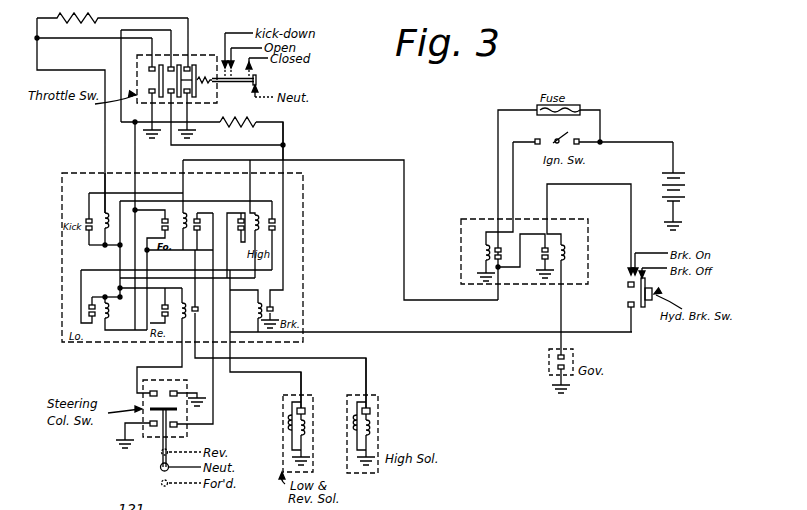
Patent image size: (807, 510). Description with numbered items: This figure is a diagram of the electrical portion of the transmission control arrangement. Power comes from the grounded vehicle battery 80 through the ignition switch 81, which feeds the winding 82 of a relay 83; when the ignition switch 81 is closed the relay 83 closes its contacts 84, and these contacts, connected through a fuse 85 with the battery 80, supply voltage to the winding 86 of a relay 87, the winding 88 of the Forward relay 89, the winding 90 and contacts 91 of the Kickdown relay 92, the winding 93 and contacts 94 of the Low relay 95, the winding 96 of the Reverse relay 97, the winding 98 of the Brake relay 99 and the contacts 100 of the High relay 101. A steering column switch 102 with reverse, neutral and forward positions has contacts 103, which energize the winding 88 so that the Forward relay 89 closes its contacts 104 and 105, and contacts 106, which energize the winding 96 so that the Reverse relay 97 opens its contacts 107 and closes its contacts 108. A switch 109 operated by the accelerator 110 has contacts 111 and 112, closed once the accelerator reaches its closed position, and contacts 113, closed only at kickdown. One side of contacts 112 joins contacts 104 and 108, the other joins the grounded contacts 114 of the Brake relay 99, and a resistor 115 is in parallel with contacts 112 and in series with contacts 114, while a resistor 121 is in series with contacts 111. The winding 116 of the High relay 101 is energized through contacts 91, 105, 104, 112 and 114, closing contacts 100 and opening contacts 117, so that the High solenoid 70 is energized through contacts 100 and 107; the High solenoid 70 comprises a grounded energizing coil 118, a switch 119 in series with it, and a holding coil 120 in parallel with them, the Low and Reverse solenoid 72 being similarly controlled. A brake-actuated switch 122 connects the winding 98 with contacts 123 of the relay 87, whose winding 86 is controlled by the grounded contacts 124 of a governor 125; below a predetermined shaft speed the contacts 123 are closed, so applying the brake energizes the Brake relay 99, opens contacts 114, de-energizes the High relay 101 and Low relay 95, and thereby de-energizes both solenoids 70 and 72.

The High solenoid 70 is at (386, 417).
The Low and Reverse solenoid 72 is at (280, 448).
The battery 80 is at (686, 186).
The ignition switch 81 is at (552, 137).
The winding 82 is at (485, 245).
The relay 83 is at (475, 254).
The contacts 84 is at (501, 248).
The fuse 85 is at (581, 108).
The winding 86 is at (563, 244).
The relay 87 is at (571, 257).
The winding 88 is at (185, 212).
The Forward relay 89 is at (159, 229).
The winding 90 is at (106, 212).
The contacts 91 is at (88, 214).
The Kickdown relay 92 is at (86, 238).
The winding 93 is at (109, 311).
The contacts 94 is at (93, 305).
The Low relay 95 is at (97, 328).
The winding 96 is at (183, 302).
The Reverse relay 97 is at (173, 328).
The winding 98 is at (257, 308).
The Brake relay 99 is at (254, 316).
The contacts 100 is at (277, 227).
The High relay 101 is at (262, 236).
The steering column switch 102 is at (189, 385).
The contacts 103 is at (178, 426).
The contacts 104 is at (165, 218).
The contacts 105 is at (204, 217).
The contacts 106 is at (150, 392).
The contacts 107 is at (197, 313).
The contacts 108 is at (167, 304).
The switch 109 is at (218, 50).
The accelerator 110 is at (258, 80).
The contacts 111 is at (188, 94).
The contacts 112 is at (181, 65).
The contacts 113 is at (149, 70).
The contacts 114 is at (274, 310).
The resistor 115 is at (230, 127).
The winding 116 is at (276, 219).
The contacts 117 is at (241, 213).
The energizing coil 118 is at (306, 437).
The switch 119 is at (303, 407).
The holding coil 120 is at (289, 425).
The resistor 121 is at (83, 22).
The switch 122 is at (643, 309).
The contacts 123 is at (540, 260).
The contacts 124 is at (556, 357).
The governor 125 is at (547, 367).